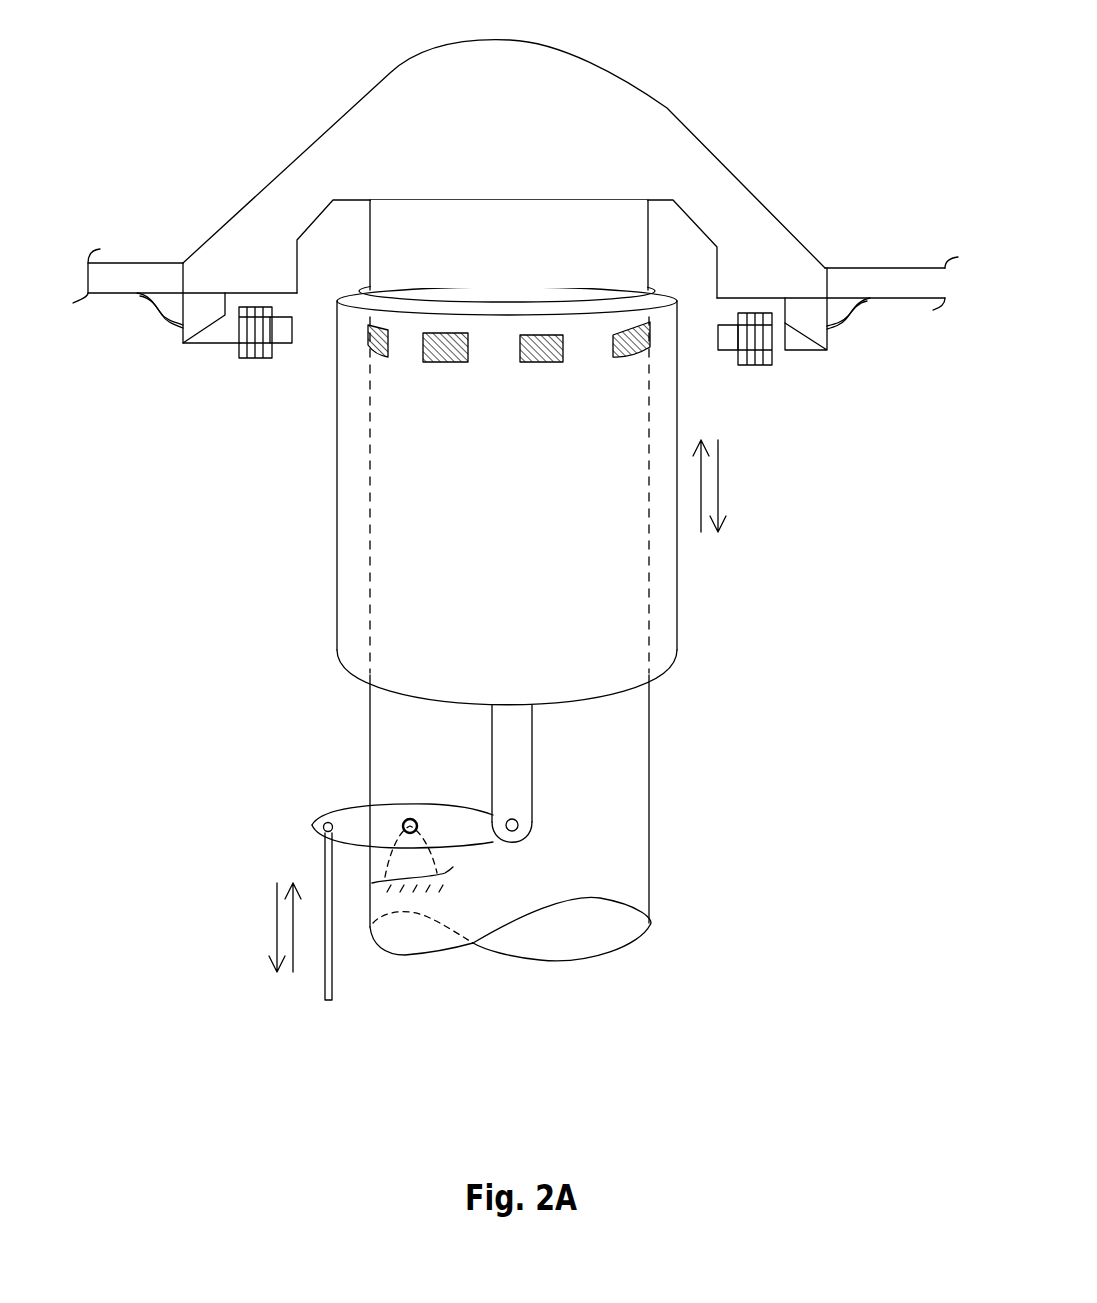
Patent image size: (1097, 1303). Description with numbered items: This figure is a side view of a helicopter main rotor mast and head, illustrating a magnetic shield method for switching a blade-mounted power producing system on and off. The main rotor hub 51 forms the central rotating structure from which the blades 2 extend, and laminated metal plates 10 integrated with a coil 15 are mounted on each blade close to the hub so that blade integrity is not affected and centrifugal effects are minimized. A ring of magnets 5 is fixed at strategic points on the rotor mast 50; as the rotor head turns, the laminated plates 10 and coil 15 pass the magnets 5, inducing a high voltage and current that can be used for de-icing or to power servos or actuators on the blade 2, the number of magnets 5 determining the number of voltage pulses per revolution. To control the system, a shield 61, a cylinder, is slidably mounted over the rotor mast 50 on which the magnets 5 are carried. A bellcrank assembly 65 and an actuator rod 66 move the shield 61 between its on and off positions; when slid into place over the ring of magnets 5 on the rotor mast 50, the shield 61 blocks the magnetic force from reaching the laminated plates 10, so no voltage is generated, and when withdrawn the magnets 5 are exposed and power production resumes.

The blade 2 is at (152, 262).
The main rotor hub 51 is at (690, 133).
The laminated metal plates 10 is at (210, 343).
The coil 15 is at (255, 358).
The magnets 5 is at (617, 357).
The shield 61 is at (679, 588).
The rotor mast 50 is at (651, 838).
The bellcrank assembly 65 is at (347, 810).
The actuator rod 66 is at (325, 998).